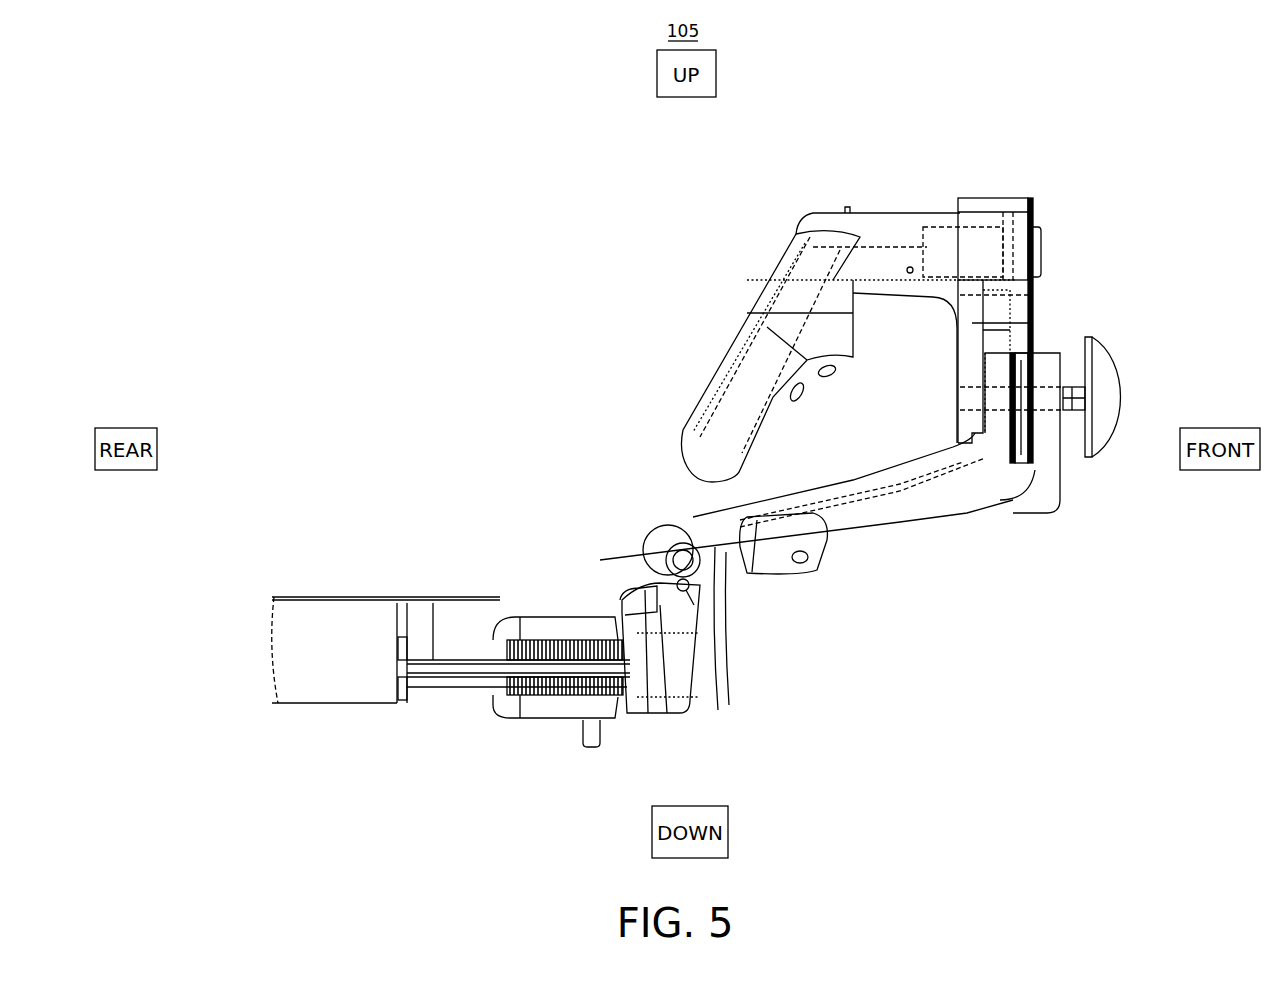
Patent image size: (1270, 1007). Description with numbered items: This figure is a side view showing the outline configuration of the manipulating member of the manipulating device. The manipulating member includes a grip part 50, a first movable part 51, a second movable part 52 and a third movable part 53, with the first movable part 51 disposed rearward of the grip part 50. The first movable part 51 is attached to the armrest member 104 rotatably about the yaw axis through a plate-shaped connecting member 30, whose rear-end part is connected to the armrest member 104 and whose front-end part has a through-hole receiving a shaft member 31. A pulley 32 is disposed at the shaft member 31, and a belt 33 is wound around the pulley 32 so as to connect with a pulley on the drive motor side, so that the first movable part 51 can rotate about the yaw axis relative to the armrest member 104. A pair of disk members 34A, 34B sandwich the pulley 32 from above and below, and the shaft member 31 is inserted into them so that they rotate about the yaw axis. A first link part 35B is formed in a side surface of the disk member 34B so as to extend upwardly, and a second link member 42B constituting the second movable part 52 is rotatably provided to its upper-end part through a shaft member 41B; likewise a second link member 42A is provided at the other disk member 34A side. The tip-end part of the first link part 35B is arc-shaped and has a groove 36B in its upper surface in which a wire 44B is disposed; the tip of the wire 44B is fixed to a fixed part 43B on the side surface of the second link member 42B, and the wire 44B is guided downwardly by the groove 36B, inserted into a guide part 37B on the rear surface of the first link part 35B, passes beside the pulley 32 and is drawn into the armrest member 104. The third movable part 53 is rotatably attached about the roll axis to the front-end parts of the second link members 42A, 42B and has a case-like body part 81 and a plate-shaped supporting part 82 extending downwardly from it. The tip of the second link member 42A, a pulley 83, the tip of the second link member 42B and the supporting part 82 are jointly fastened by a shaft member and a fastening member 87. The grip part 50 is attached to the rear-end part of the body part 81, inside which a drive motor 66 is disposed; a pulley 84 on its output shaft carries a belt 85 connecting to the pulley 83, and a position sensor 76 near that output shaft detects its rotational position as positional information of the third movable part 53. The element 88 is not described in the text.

The grip part 50 is at (722, 360).
The drive motor 66 is at (934, 240).
The position sensor 76 is at (1005, 215).
The pulley 84 is at (1013, 232).
The third movable part 53 is at (1032, 198).
The body part 81 is at (1033, 222).
The belt 85 is at (1033, 295).
The supporting part 82 is at (1033, 323).
The pulley 83 is at (1033, 355).
The second link member 42A is at (1015, 488).
The second link member 42B is at (923, 508).
The fastening member 87 is at (1064, 412).
The fastener 88 is at (1050, 415).
The second movable part 52 is at (866, 538).
The groove 36B is at (655, 545).
The wire 44B is at (722, 600).
The fixed part 43B is at (780, 575).
The shaft member 41B is at (693, 715).
The first link part 35B is at (665, 715).
The guide part 37B is at (628, 712).
The armrest member 104 is at (331, 680).
The belt 33 is at (407, 705).
The connecting member 30 is at (465, 679).
The pulley 32 is at (510, 662).
The disk member 34B is at (532, 697).
The first movable part 51 is at (537, 611).
The disk member 34A is at (566, 642).
The shaft member 31 is at (591, 749).